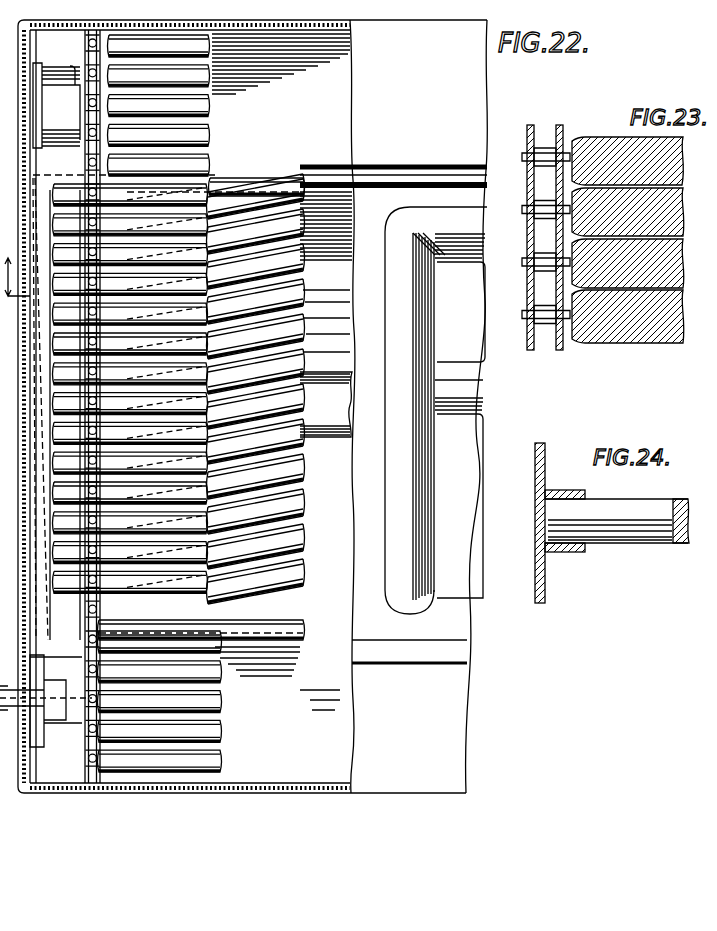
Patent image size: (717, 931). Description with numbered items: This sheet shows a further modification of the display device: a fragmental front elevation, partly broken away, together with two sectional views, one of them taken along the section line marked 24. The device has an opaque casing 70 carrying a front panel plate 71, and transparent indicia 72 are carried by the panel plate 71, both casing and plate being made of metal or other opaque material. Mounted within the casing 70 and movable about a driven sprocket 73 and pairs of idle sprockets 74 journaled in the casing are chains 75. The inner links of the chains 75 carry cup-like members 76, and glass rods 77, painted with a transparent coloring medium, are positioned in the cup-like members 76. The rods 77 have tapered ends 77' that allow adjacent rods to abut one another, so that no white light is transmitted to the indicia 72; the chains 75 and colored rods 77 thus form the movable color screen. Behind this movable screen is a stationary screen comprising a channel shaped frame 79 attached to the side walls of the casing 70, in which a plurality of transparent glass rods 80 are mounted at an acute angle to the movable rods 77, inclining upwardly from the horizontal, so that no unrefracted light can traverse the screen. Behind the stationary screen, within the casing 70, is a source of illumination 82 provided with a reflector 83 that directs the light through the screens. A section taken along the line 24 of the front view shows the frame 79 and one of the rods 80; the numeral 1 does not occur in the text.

In FIG. 22, the casing 70 is at (222, 790).
In FIG. 22, the front panel plate 71 is at (470, 437).
In FIG. 22, the transparent indicia 72 is at (436, 535).
In FIG. 22, the driven sprocket 73 is at (72, 723).
In FIG. 22, the idle sprockets 74 is at (33, 80).
In FIG. 22, the chains 75 is at (72, 745).
In FIG. 23, the chains 75 is at (532, 131).
In FIG. 23, the cup-like members 76 is at (587, 138).
In FIG. 22, the glass rods 77 is at (161, 403).
In FIG. 23, the glass rods 77 is at (644, 245).
In FIG. 23, the tapered ends 77' is at (628, 229).
In FIG. 22, the channel shaped frame 79 is at (254, 172).
In FIG. 24, the channel shaped frame 79 is at (567, 553).
In FIG. 22, the transparent glass rods 80 is at (277, 258).
In FIG. 24, the transparent glass rods 80 is at (642, 548).
In FIG. 22, the source of illumination 82 is at (322, 390).
In FIG. 22, the reflector 83 is at (323, 180).
In FIG. 24, the plate 1 is at (535, 463).
In FIG. 22, the section line 24- 24 is at (37, 273).